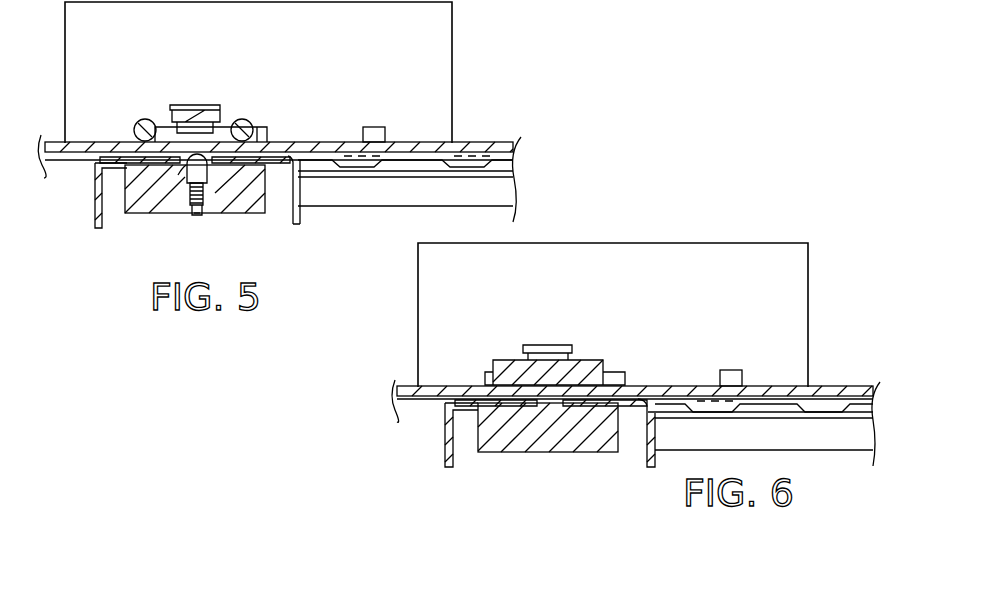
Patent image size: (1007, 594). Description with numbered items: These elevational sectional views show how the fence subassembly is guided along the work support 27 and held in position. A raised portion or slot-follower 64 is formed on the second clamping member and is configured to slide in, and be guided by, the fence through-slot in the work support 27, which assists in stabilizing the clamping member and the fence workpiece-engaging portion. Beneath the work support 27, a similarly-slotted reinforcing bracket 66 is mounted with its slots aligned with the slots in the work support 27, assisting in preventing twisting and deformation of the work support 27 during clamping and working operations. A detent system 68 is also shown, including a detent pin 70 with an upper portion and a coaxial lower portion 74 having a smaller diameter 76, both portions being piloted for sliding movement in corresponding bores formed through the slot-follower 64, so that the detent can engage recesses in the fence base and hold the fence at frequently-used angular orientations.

In FIG. 5, the work support 27 is at (80, 162).
In FIG. 6, the work support 27 is at (408, 395).
In FIG. 5, the slot-follower 64 is at (213, 160).
In FIG. 6, the slot-follower 64 is at (570, 386).
In FIG. 5, the reinforcing bracket 66 is at (92, 202).
In FIG. 6, the reinforcing bracket 66 is at (443, 442).
In FIG. 5, the detent system 68 is at (188, 190).
In FIG. 5, the detent pin 70 is at (180, 170).
In FIG. 5, the lower portion 74 is at (208, 175).
In FIG. 5, the smaller diameter 76 is at (199, 213).